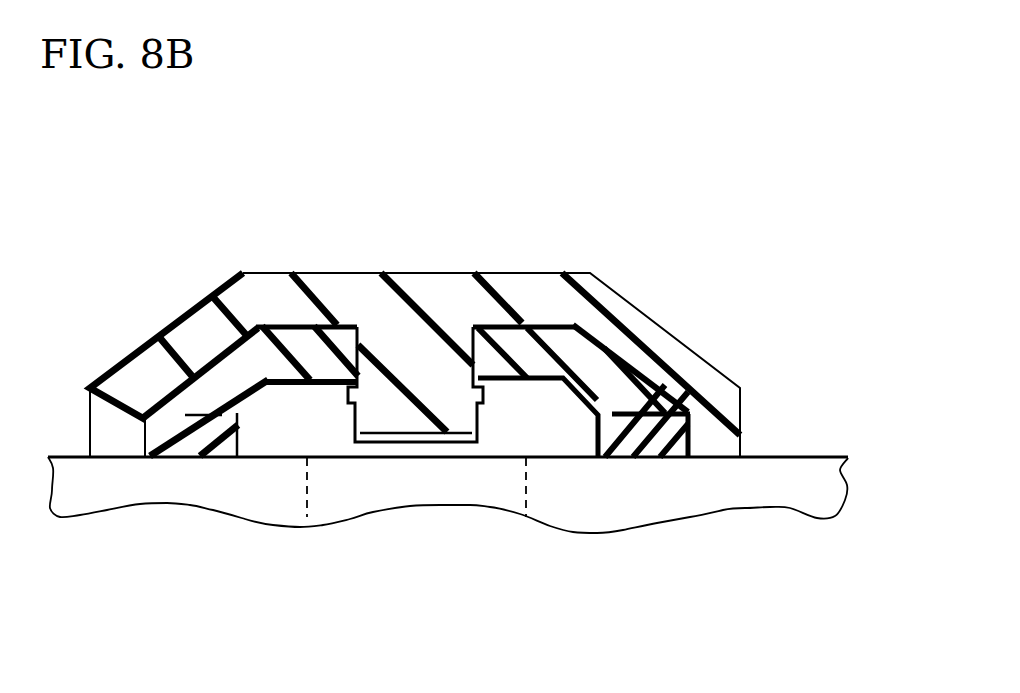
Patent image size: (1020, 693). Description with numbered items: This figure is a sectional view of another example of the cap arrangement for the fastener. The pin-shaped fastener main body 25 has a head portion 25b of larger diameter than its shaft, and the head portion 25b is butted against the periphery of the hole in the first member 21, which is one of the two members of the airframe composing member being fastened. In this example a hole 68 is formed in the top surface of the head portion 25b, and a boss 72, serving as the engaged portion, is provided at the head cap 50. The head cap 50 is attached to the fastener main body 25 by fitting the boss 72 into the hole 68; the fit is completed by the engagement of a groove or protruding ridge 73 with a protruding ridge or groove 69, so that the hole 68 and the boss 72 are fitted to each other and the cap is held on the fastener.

The first member 21 is at (788, 457).
The fastener main body 25 is at (570, 392).
The head portion 25b is at (246, 395).
The head cap 50 is at (337, 273).
The hole 68 is at (480, 392).
The protruding ridge or groove 69 is at (483, 402).
The boss 72 is at (347, 350).
The groove or protruding ridge 73 is at (360, 402).